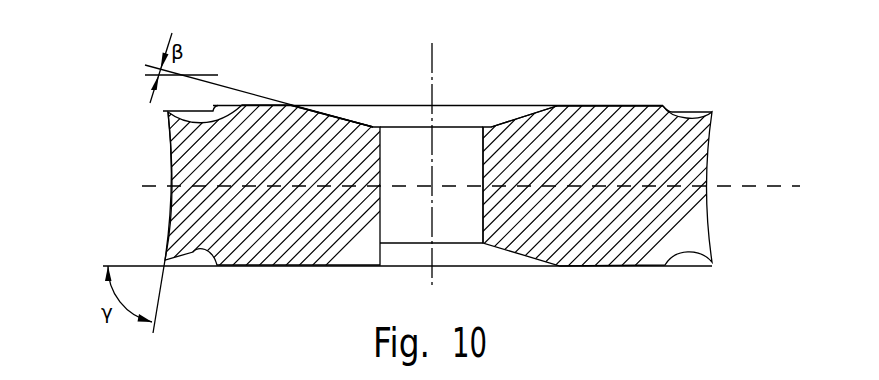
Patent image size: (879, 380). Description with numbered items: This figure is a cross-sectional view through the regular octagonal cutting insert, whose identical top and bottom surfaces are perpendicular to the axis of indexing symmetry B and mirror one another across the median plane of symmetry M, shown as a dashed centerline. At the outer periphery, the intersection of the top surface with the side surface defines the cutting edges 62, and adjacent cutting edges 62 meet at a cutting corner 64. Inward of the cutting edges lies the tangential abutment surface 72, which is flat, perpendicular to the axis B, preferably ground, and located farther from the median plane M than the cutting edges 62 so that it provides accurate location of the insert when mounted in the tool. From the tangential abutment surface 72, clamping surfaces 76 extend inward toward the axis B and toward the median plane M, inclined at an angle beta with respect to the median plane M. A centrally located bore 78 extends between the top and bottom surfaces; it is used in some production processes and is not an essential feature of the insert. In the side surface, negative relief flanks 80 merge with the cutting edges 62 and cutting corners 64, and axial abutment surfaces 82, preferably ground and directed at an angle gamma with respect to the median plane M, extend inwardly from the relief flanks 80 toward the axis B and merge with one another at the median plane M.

The cutting edge 62 is at (163, 112).
The cutting corner 64 is at (712, 111).
The tangential abutment surface 72 is at (545, 106).
The clamping surface 76 is at (345, 113).
The bore 78 is at (483, 155).
The negative relief flank 80 is at (167, 129).
The axial abutment surface 82 is at (168, 160).
The axis of indexing symmetry B is at (433, 58).
The plane of symmetry M is at (777, 187).